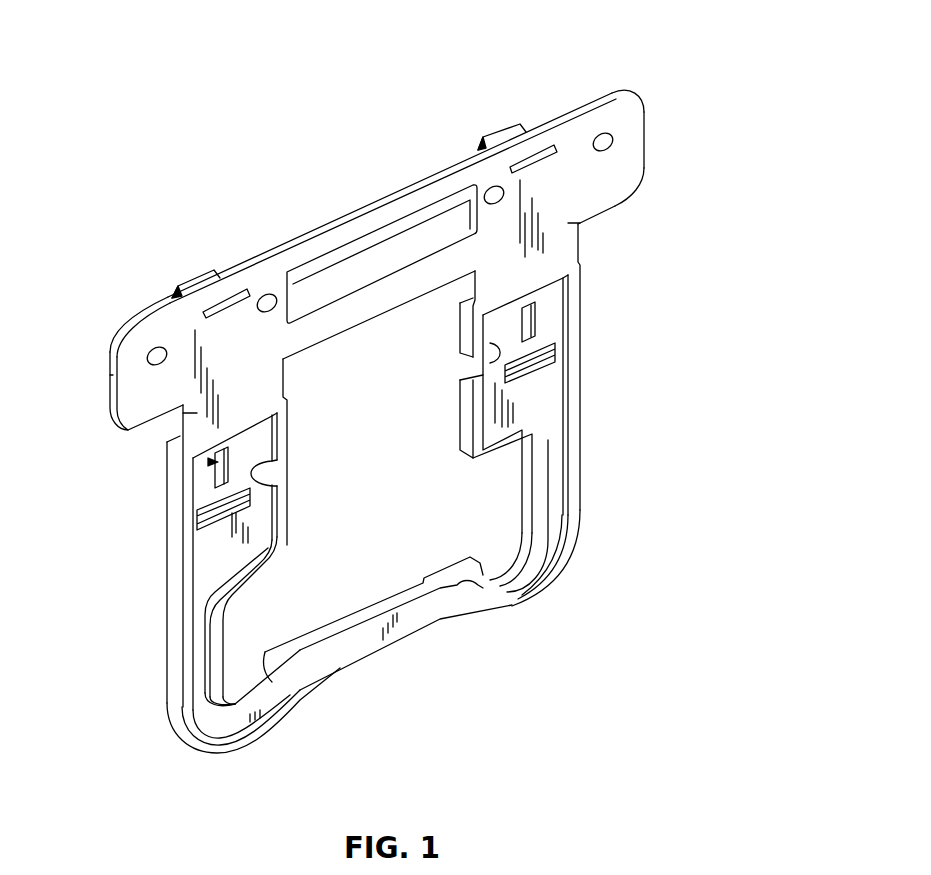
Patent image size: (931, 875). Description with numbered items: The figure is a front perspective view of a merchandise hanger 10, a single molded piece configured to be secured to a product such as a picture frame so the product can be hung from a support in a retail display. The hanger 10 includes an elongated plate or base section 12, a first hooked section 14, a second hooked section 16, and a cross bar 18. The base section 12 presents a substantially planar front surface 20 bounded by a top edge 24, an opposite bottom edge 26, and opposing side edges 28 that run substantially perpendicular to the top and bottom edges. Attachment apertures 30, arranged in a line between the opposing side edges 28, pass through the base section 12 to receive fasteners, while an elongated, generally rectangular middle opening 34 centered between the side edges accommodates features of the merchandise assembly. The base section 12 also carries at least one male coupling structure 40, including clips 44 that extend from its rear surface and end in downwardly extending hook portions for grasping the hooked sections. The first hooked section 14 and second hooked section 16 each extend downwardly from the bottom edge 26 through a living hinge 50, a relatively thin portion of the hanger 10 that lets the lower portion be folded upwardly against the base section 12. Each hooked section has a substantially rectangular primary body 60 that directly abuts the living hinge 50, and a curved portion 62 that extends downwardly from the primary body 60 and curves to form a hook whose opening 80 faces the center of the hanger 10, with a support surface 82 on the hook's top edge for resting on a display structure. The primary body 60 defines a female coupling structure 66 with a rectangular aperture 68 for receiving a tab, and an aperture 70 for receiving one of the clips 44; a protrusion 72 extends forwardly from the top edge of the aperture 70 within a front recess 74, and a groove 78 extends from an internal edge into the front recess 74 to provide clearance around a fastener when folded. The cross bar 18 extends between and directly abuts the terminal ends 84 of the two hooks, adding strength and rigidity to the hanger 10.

The merchandise hanger 10 is at (208, 86).
The base section 12 is at (638, 157).
The first hooked section 14 is at (200, 563).
The second hooked section 16 is at (553, 382).
The cross bar 18 is at (383, 643).
The front surface 20 is at (587, 119).
The top edge 24 is at (370, 207).
The bottom edge 26 is at (615, 204).
The opposing side edges 28 is at (648, 131).
The attachment apertures 30 is at (613, 142).
The middle opening 34 is at (425, 247).
The male coupling structure 40 is at (190, 280).
The clips 44 is at (170, 291).
The living hinge 50 is at (569, 223).
The primary body 60 is at (258, 521).
The curved portion 62 is at (213, 727).
The female coupling structure 66 is at (209, 462).
The aperture 68 is at (228, 460).
The aperture 70 is at (200, 513).
The protrusion 72 is at (200, 513).
The front recess 74 is at (233, 560).
The groove 78 is at (247, 483).
The opening 80 is at (267, 650).
The support surface 82 is at (248, 698).
The terminal ends 84 is at (365, 608).